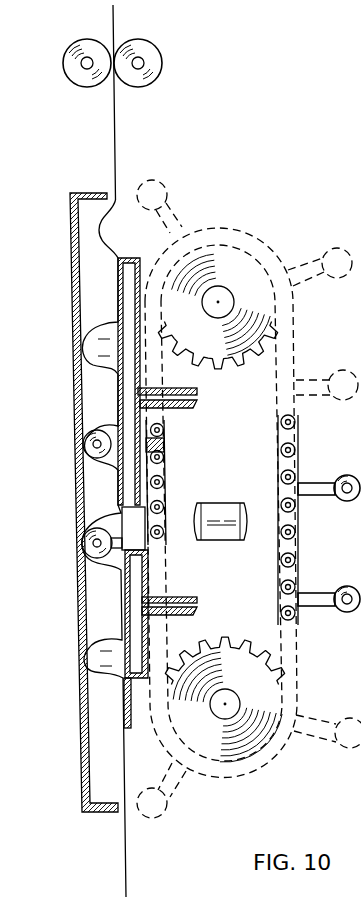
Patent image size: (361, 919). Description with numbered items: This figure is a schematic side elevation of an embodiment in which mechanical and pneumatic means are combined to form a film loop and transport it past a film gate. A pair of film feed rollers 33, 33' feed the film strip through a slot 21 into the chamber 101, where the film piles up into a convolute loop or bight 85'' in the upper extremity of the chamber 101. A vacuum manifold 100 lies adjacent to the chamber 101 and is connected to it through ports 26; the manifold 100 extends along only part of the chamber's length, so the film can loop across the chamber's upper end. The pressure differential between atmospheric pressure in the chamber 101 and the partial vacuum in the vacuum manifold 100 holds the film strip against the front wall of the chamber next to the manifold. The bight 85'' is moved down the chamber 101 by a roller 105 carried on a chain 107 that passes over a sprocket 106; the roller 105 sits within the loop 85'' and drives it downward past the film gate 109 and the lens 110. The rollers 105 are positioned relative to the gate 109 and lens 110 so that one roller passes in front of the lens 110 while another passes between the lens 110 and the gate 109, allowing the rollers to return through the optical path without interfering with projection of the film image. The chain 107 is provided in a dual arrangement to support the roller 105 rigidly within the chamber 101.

The film feed roller 33 is at (147, 59).
The film feed roller 33' is at (70, 59).
The web 21 is at (120, 210).
The film loop or bight 85'' is at (76, 439).
The vacuum manifold 100 is at (129, 257).
The chamber 101 is at (98, 393).
The roller 105 is at (82, 447).
The carriage block 26 is at (125, 502).
The film gate 109 is at (133, 524).
The sprocket 106 is at (223, 370).
The chain 107 is at (289, 451).
The lens 110 is at (220, 544).